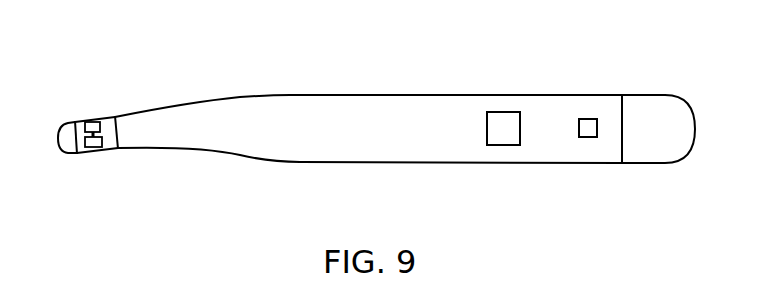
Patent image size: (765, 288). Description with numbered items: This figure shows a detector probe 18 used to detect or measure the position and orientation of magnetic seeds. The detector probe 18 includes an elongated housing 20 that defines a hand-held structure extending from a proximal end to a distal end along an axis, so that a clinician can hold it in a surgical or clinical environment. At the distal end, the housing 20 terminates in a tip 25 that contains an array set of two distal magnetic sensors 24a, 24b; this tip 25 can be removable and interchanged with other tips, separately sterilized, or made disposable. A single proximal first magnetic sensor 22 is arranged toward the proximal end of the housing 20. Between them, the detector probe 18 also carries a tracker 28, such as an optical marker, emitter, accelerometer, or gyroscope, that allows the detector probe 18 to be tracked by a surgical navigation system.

The detector probe 18 is at (364, 96).
The housing 20 is at (363, 93).
The first magnetic sensor 22 is at (587, 117).
The distal magnetic sensor 24a is at (88, 117).
The distal magnetic sensor 24b is at (93, 152).
The tip 25 is at (76, 165).
The tracker 28 is at (504, 110).